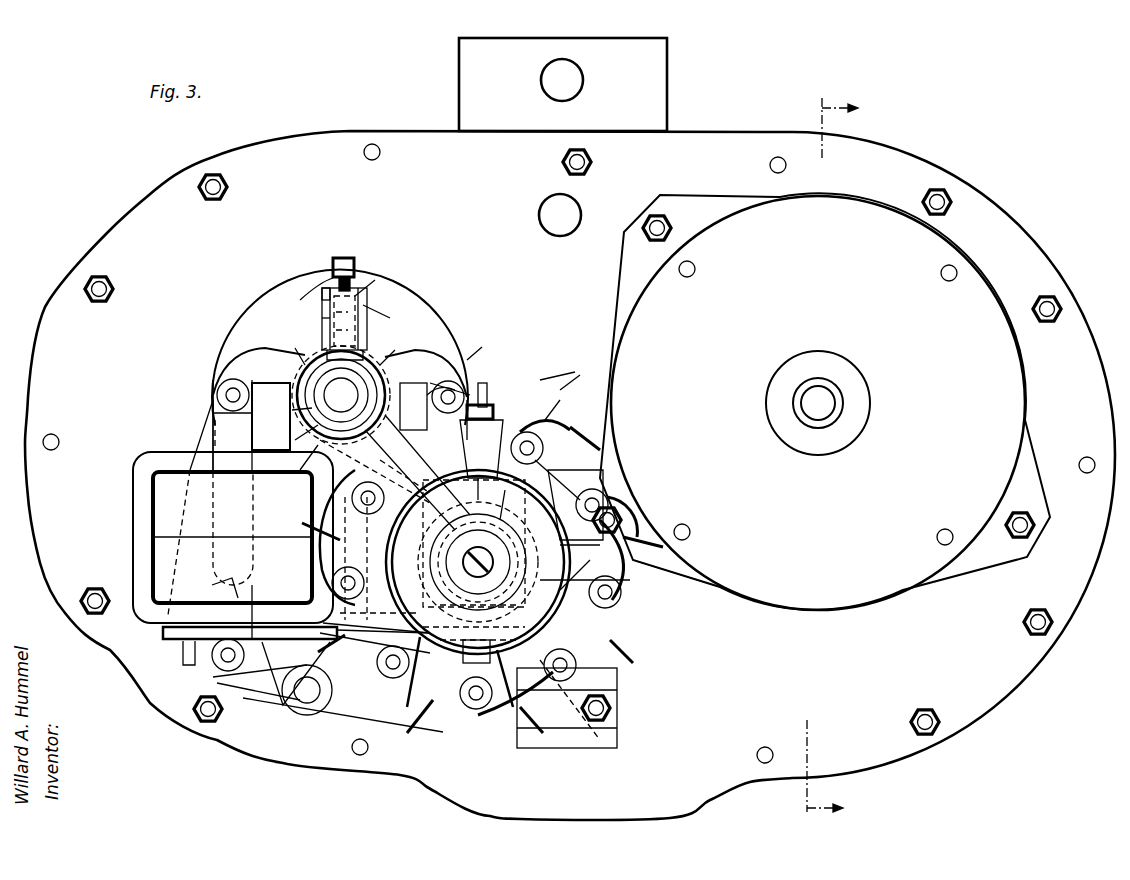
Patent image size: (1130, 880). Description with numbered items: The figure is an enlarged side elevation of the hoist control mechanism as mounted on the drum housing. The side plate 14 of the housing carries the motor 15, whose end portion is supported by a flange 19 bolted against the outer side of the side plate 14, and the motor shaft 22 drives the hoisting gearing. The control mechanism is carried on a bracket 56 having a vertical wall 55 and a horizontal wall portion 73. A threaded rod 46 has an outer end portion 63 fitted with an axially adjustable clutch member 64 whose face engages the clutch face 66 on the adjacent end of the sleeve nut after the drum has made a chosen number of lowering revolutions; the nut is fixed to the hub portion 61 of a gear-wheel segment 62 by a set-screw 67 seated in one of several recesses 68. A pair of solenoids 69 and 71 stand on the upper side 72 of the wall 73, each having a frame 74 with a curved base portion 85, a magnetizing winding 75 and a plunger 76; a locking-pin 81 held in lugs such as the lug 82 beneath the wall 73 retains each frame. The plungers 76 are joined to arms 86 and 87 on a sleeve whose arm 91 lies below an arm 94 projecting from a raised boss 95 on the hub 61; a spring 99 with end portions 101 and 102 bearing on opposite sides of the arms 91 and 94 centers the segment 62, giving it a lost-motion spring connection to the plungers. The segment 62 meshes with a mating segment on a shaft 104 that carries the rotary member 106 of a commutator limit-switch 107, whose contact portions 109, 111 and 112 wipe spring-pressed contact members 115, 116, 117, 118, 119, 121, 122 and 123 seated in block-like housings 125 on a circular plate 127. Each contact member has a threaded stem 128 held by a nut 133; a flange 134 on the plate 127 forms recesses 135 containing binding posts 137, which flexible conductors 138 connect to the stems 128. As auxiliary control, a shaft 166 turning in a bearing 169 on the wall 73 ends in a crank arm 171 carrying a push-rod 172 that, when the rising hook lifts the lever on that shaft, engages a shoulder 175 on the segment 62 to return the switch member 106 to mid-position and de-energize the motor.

The side plate 14 is at (570, 432).
The motor 15 is at (818, 403).
The flange 19 is at (632, 258).
The shaft 22 is at (835, 404).
The threaded rod 46 is at (341, 395).
The wall 55 is at (262, 307).
The bracket 56 is at (228, 352).
The hub portion 61 is at (300, 397).
The gear-wheel segment 62 is at (405, 355).
The outer end portion 63 is at (300, 397).
The clutch member 64 is at (295, 436).
The clutch face 66 is at (292, 380).
The set-screw 67 is at (355, 267).
The recesses 68 is at (337, 377).
The solenoid 69 is at (190, 460).
The solenoid 71 is at (532, 430).
The upper side 72 is at (300, 622).
The horizontal wall portion 73 is at (296, 673).
The frame 74 is at (135, 540).
The magnetizing winding 75 is at (153, 506).
The plunger 76 is at (213, 488).
The locking-pin 81 is at (224, 662).
The lug 82 is at (179, 666).
The curved base portion 85 is at (208, 584).
The arm 86 is at (262, 362).
The arm 87 is at (396, 317).
The arm 91 is at (360, 320).
The arm 94 is at (367, 303).
The raised boss 95 is at (322, 315).
The spring 99 is at (322, 294).
The end portion 101 is at (318, 274).
The end portion 102 is at (378, 288).
The shaft 104 is at (478, 562).
The rotary member 106 is at (630, 563).
The commutator limit-switch 107 is at (598, 470).
The contact portions 109 is at (501, 503).
The contact portions 111 is at (374, 632).
The contact portions 112 is at (596, 540).
The contact member 115 is at (330, 566).
The contact member 116 is at (310, 492).
The contact member 117 is at (510, 385).
The contact member 118 is at (573, 505).
The contact member 119 is at (555, 555).
The contact member 121 is at (468, 673).
The contact member 122 is at (460, 700).
The contact member 123 is at (478, 622).
The block-like housings 125 is at (510, 725).
The circular plate 127 is at (569, 397).
The threaded stem portion 128 is at (555, 750).
The nut 133 is at (615, 735).
The flange 134 is at (565, 370).
The recess 135 is at (598, 442).
The binding post 137 is at (575, 672).
The flexible conductor 138 is at (610, 700).
The shaft 166 is at (300, 700).
The bearing 169 is at (260, 694).
The crank arm 171 is at (345, 722).
The push-rod 172 is at (385, 676).
The shoulder 175 is at (464, 369).